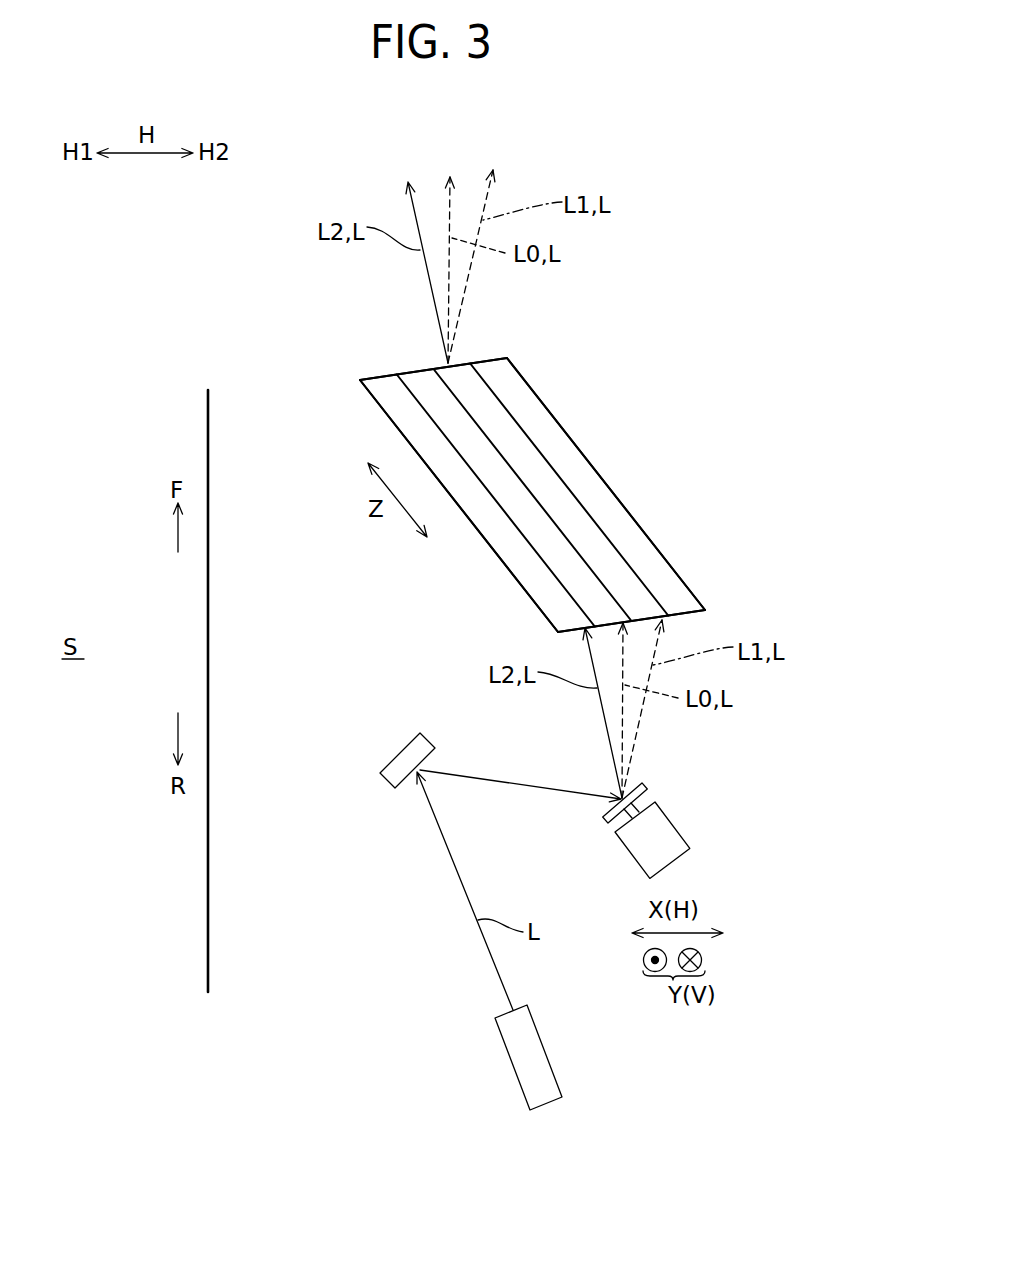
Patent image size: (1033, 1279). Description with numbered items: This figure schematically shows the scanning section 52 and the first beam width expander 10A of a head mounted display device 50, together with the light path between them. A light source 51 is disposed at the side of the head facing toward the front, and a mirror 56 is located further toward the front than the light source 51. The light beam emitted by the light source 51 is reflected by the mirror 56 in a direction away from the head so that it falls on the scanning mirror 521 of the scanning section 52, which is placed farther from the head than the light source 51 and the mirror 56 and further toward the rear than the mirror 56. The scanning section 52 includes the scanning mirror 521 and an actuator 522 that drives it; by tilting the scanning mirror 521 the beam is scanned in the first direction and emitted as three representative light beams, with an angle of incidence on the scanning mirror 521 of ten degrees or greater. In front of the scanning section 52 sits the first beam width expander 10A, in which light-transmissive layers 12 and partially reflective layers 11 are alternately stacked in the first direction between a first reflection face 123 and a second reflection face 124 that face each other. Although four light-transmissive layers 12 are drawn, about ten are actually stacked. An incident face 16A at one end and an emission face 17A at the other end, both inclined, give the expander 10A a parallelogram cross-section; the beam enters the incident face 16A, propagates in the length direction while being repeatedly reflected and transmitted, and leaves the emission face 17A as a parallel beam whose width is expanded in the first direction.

The first beam width expander 10A is at (595, 468).
The partially reflective layers 11 is at (527, 433).
The light-transmissive layers 12 is at (638, 563).
The first reflection face 123 is at (477, 528).
The second reflection face 124 is at (618, 498).
The incident face 16A is at (688, 612).
The emission face 17A is at (418, 374).
The head mounted display device 50 is at (811, 317).
The light source 51 is at (557, 1073).
The scanning section 52 is at (712, 821).
The scanning mirror 521 is at (640, 787).
The actuator 522 is at (660, 825).
The mirror 56 is at (393, 788).